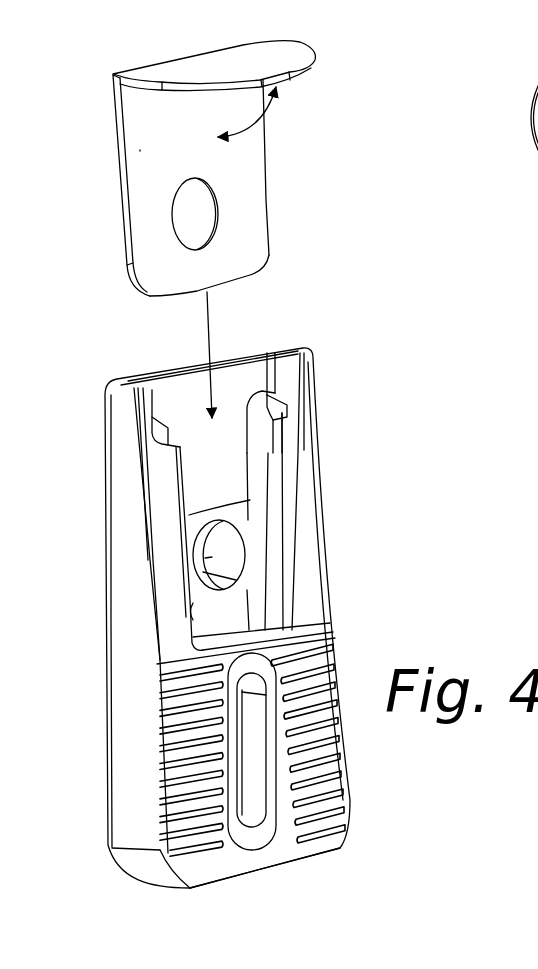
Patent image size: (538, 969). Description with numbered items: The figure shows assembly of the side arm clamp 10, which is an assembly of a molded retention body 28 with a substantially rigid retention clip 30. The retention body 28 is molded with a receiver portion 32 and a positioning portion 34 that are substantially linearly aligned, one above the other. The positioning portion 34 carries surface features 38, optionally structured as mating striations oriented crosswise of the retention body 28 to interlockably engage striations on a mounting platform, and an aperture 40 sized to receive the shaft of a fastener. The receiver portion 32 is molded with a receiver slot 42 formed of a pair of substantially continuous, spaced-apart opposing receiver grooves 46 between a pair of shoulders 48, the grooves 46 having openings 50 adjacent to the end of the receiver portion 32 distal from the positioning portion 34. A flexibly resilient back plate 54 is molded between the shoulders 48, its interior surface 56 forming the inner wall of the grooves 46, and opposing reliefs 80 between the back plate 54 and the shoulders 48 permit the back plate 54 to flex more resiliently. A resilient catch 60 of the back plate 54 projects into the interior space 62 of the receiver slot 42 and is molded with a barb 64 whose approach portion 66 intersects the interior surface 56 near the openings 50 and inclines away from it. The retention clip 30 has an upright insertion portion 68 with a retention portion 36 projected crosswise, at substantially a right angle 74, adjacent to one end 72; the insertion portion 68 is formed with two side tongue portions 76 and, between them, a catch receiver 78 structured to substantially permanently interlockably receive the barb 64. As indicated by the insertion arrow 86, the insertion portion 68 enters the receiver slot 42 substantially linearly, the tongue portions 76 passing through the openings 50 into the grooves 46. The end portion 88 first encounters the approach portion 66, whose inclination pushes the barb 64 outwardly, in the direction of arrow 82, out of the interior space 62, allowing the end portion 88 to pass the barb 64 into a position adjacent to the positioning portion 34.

The side arm clamp 10 is at (387, 299).
The retention body 28 is at (104, 660).
The retention clip 30 is at (116, 140).
The receiver portion 32 is at (118, 543).
The positioning portion 34 is at (140, 835).
The retention portion 36 is at (309, 75).
The surface features 38 is at (343, 747).
The aperture 40 is at (332, 845).
The receiver slot 42 is at (198, 352).
The receiver grooves 46 is at (185, 475).
The shoulders 48 is at (120, 410).
The openings 50 is at (165, 403).
The back plate 54 is at (198, 604).
The interior surface 56 is at (236, 493).
The resilient catch 60 is at (200, 567).
The interior space 62 is at (210, 439).
The barb 64 is at (232, 580).
The approach portion 66 is at (222, 538).
The insertion portion 68 is at (162, 157).
The end 72 is at (114, 75).
The right angle 74 is at (247, 112).
The side tongue portions 76 is at (142, 212).
The catch receiver 78 is at (227, 220).
The reliefs 80 is at (230, 447).
The arrow (outward barb direction) 82 is at (232, 551).
The arrow (insertion direction) 86 is at (212, 306).
The end portion 88 is at (200, 291).